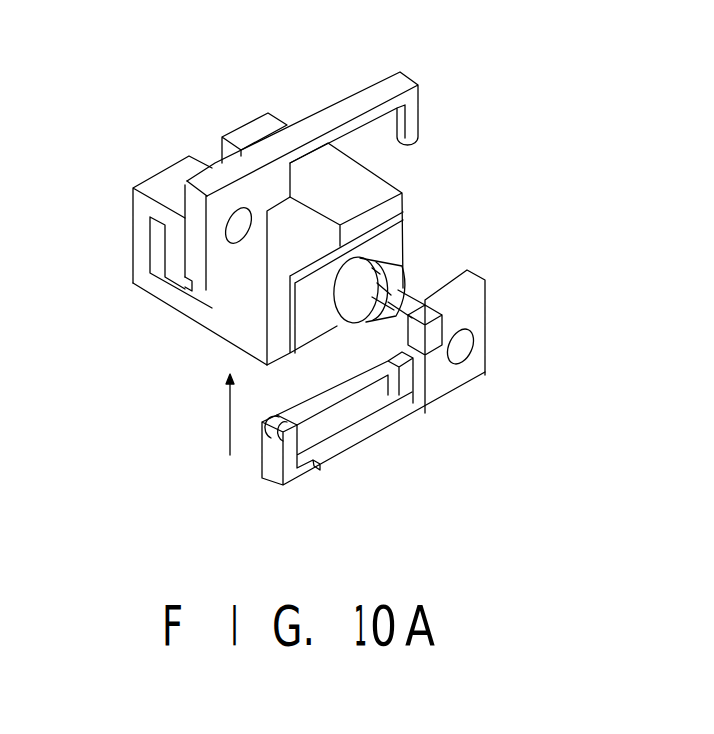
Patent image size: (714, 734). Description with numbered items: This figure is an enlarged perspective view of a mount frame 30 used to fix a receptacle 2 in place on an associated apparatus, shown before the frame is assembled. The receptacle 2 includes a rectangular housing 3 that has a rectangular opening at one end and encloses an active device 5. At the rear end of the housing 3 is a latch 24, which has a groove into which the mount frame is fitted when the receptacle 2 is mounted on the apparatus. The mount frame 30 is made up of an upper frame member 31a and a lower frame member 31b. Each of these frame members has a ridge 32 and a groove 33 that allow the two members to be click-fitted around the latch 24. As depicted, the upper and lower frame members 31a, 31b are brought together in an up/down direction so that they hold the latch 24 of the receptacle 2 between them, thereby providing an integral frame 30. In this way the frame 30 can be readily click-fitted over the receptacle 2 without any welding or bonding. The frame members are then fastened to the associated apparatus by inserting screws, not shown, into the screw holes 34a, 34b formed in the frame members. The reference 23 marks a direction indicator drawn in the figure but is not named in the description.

The receptacle 2 is at (270, 110).
The housing 3 is at (173, 173).
The active device 5 is at (372, 266).
The clamp bar assembly 23 is at (263, 481).
The latch 24 is at (304, 345).
The mount frame 30 is at (439, 212).
The upper frame member 31a is at (215, 268).
The lower frame member 31b is at (447, 382).
The ridge 32 is at (354, 390).
The groove 33 is at (355, 433).
The screw hole 34a is at (228, 216).
The screw hole 34b is at (460, 343).